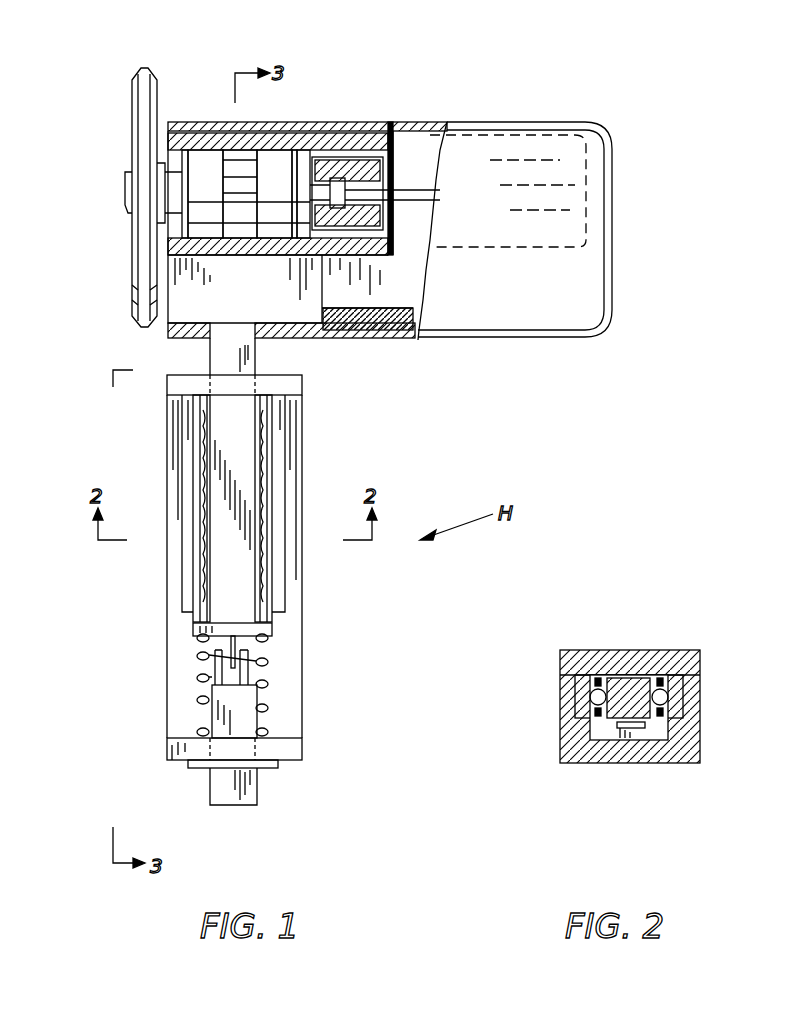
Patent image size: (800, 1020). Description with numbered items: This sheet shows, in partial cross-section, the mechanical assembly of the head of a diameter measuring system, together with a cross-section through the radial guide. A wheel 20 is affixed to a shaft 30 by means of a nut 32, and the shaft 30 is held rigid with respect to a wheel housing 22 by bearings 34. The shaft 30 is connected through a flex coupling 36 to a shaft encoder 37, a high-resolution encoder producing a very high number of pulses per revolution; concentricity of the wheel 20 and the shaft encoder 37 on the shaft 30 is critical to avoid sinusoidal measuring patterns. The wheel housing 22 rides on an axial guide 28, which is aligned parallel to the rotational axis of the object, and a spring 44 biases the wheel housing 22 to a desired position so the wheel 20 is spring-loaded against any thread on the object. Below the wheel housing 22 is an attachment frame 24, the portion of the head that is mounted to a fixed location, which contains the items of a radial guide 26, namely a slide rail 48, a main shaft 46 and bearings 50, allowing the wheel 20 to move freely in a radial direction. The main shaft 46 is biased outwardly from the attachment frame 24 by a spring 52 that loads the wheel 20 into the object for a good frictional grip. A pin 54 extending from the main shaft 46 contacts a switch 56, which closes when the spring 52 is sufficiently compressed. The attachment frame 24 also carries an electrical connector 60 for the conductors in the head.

In FIG. 1, the wheel 20 is at (132, 240).
In FIG. 1, the nut 32 is at (124, 189).
In FIG. 1, the wheel housing 22 is at (472, 122).
In FIG. 1, the axial guide 28 is at (402, 281).
In FIG. 1, the shaft encoder 37 is at (416, 150).
In FIG. 1, the bearings 34 is at (203, 160).
In FIG. 1, the shaft 30 is at (242, 205).
In FIG. 1, the flex coupling 36 is at (350, 160).
In FIG. 1, the spring 44 is at (345, 330).
In FIG. 1, the radial guide 26 is at (248, 355).
In FIG. 1, the attachment frame 24 is at (302, 413).
In FIG. 1, the pin 54 is at (238, 652).
In FIG. 1, the switch 56 is at (258, 678).
In FIG. 1, the spring 52 is at (268, 709).
In FIG. 1, the electrical connector 60 is at (240, 790).
In FIG. 2, the main shaft 46 is at (628, 690).
In FIG. 2, the slide rail 48 is at (577, 688).
In FIG. 2, the bearings 50 is at (672, 695).